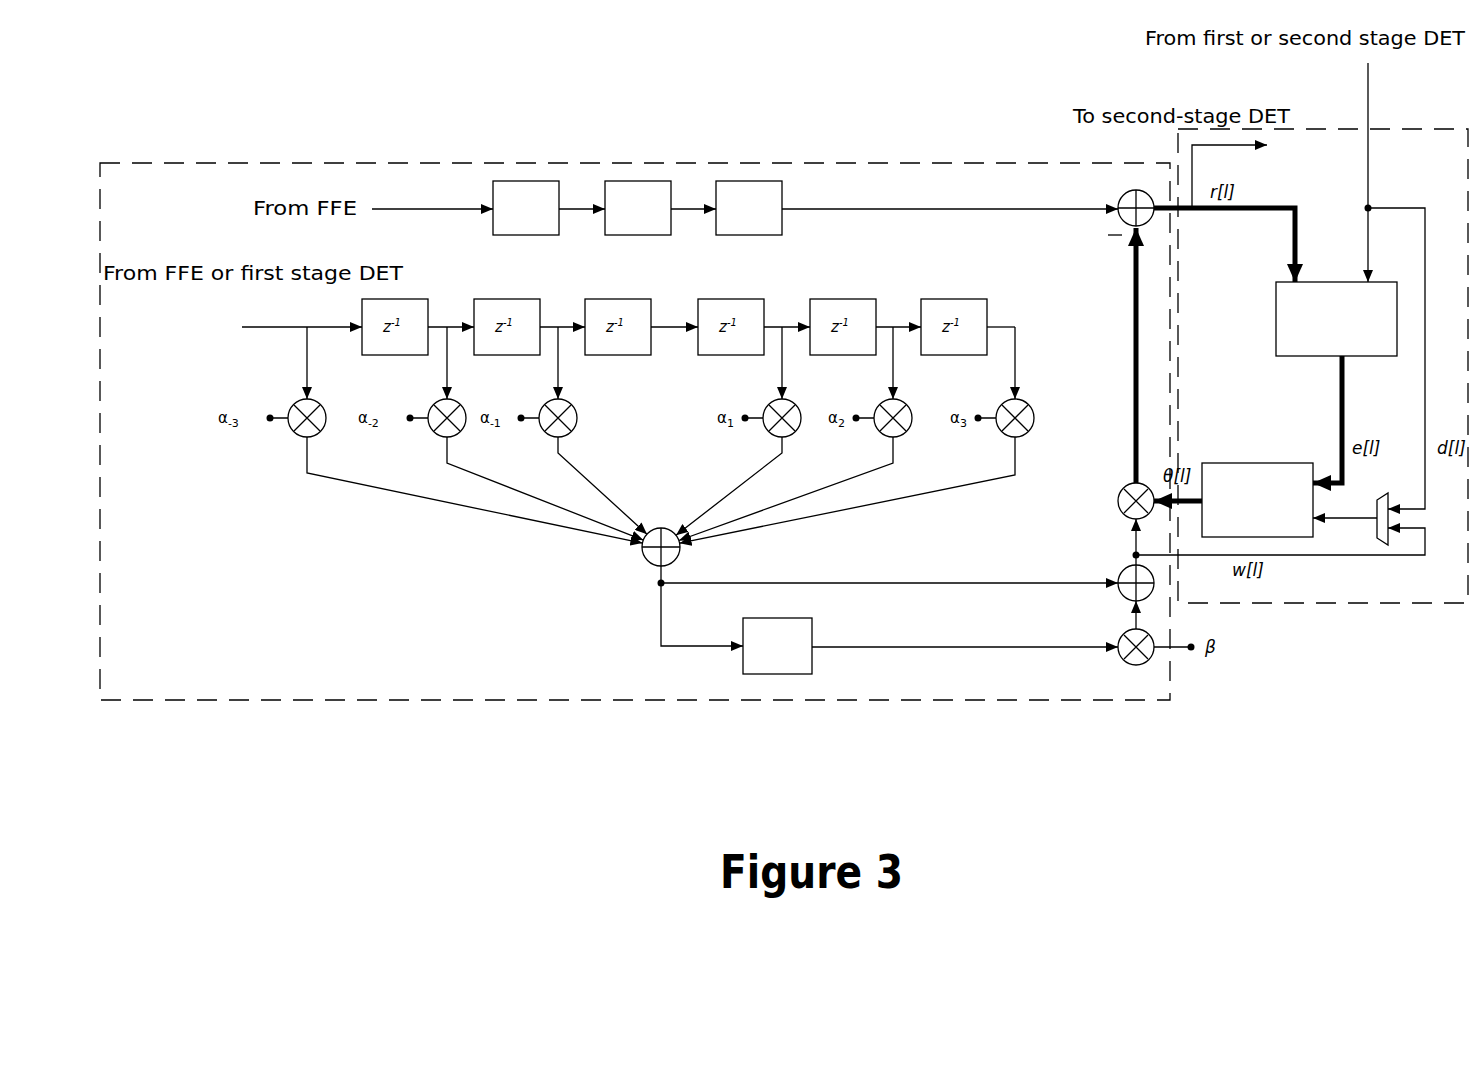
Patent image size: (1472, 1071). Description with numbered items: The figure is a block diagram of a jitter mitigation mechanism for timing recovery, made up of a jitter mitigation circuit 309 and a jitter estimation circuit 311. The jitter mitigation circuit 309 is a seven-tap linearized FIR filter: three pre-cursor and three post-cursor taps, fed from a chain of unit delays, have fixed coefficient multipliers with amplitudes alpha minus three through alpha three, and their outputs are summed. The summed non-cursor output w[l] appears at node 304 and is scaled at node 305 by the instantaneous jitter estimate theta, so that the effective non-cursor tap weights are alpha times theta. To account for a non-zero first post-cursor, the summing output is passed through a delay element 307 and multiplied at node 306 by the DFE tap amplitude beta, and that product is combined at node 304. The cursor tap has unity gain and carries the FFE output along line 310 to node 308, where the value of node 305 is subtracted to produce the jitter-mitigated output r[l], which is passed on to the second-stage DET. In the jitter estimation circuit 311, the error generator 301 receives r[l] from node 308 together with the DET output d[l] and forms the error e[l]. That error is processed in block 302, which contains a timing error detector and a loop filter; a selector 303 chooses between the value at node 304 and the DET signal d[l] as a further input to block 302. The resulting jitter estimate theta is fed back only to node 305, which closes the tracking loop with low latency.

The error generator 301 is at (1336, 319).
The TED and LF block 302 is at (1257, 500).
The selector 303 is at (1379, 547).
The summing node 304 is at (1118, 586).
The multiplication node 305 is at (1118, 497).
The multiplication node 306 is at (1124, 660).
The delay element 307 is at (812, 634).
The summing node 308 is at (1118, 204).
The jitter mitigation circuit 309 is at (290, 700).
The cursor line 310 is at (918, 209).
The jitter estimation circuit 311 is at (1293, 603).